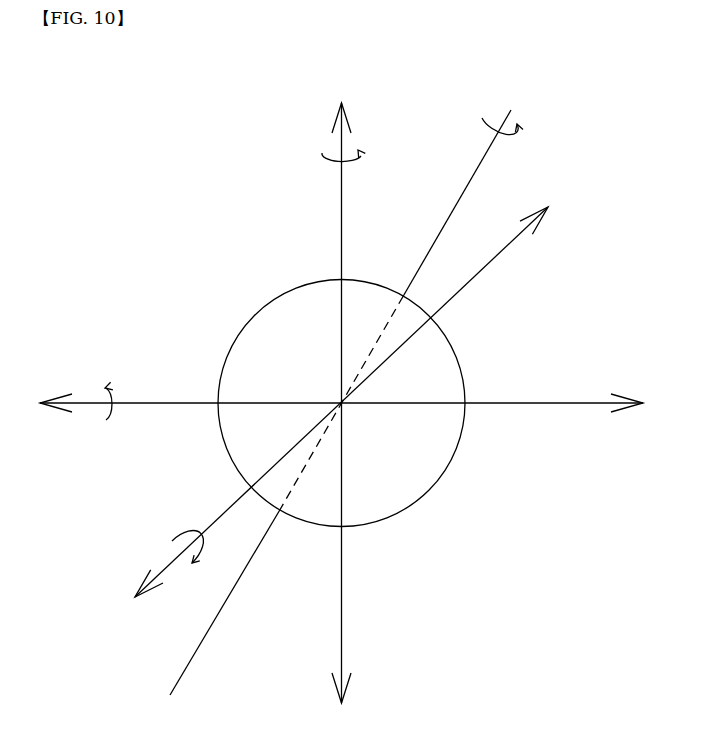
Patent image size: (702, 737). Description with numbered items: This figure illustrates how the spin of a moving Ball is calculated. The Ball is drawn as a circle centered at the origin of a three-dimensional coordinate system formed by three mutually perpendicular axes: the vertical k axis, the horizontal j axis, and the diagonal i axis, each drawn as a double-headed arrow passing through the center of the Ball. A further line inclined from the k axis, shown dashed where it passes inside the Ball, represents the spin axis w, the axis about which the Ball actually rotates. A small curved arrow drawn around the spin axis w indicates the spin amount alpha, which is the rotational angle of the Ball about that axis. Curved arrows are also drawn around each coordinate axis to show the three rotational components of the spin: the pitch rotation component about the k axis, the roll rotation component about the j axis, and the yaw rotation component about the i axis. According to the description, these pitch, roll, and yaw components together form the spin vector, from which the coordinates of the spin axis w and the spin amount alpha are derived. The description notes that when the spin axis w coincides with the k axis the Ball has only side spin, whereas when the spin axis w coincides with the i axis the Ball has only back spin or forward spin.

The ball Ball is at (457, 348).
The k axis k is at (341, 391).
The j axis j is at (332, 402).
The i axis i is at (336, 412).
The spin axis w is at (371, 389).
The pitch rotation component pitch is at (314, 165).
The roll rotation component roll is at (102, 402).
The yaw rotation component yaw is at (162, 534).
The spin amount alpha is at (551, 142).